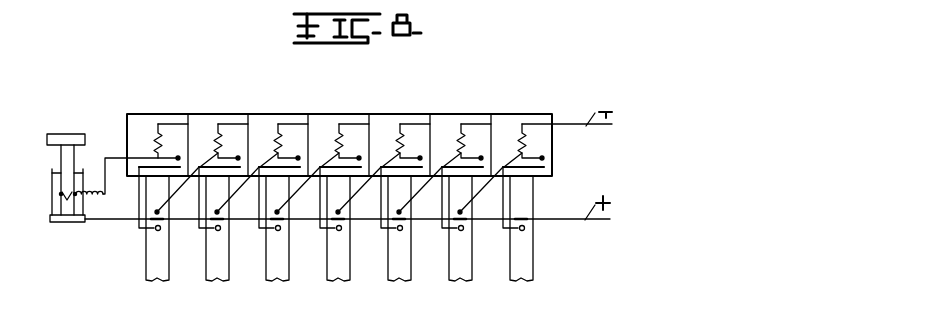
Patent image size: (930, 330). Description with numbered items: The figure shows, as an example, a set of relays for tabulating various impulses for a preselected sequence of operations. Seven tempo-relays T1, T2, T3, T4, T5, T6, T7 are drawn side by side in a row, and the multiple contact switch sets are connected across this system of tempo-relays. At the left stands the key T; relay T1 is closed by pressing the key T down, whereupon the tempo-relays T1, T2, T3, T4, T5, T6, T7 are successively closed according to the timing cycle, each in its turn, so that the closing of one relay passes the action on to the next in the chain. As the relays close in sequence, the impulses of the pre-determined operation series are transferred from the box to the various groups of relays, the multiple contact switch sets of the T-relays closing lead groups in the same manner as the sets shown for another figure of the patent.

The key T is at (62, 134).
The tempo-relay T1 is at (153, 114).
The tempo-relay T2 is at (213, 114).
The tempo-relay T3 is at (273, 114).
The tempo-relay T4 is at (334, 114).
The tempo-relay T5 is at (395, 114).
The tempo-relay T6 is at (456, 114).
The tempo-relay T7 is at (517, 114).